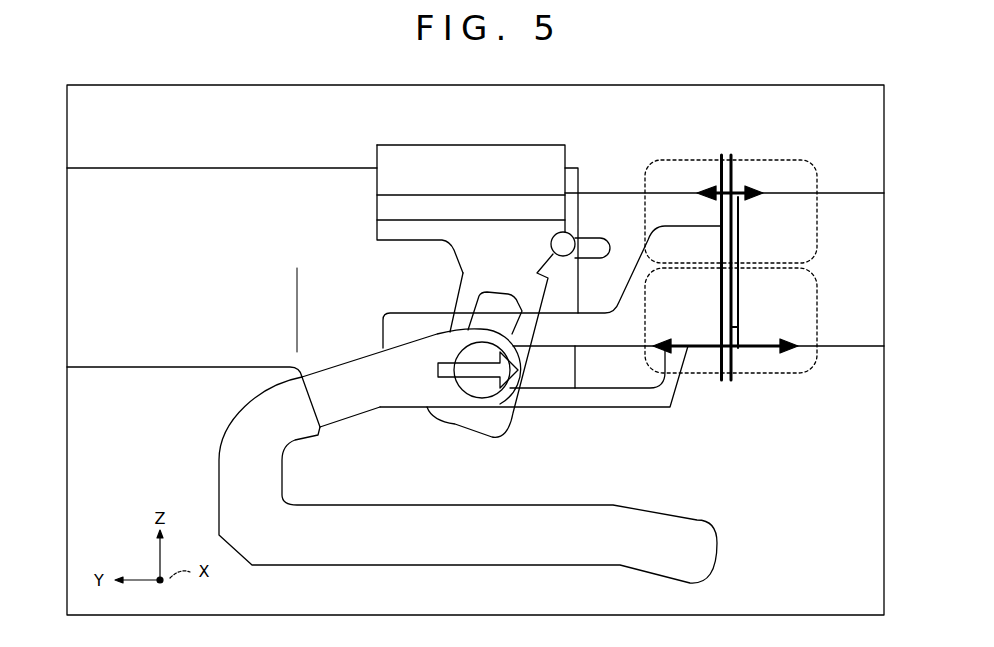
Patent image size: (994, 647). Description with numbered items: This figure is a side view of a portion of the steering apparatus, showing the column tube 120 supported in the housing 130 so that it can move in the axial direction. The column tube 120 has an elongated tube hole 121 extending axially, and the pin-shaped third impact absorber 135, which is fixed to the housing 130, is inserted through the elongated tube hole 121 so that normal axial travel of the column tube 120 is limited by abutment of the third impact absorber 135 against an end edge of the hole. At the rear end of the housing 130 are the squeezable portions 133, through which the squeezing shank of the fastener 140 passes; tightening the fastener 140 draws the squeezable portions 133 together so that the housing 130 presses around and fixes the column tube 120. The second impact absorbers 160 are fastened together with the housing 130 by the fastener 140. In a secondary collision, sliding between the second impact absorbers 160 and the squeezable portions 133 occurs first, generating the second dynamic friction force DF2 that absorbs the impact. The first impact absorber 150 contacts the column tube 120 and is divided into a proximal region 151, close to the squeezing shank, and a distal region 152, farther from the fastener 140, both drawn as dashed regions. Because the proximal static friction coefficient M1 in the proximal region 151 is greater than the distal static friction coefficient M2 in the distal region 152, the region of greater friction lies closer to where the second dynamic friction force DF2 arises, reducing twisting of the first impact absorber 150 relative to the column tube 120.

The column tube 120 is at (615, 193).
The elongated tube hole 121 is at (595, 248).
The housing 130 is at (153, 369).
The squeezable portions 133 is at (555, 370).
The third impact absorber 135 is at (563, 233).
The fastener 140 is at (402, 405).
The first impact absorber 150 is at (730, 155).
The proximal region 151 is at (702, 374).
The distal region 152 is at (685, 153).
The second impact absorbers 160 is at (652, 407).
The second dynamic friction force DF2 is at (482, 372).
The proximal static friction coefficient M1 is at (770, 338).
The distal static friction coefficient M2 is at (747, 197).